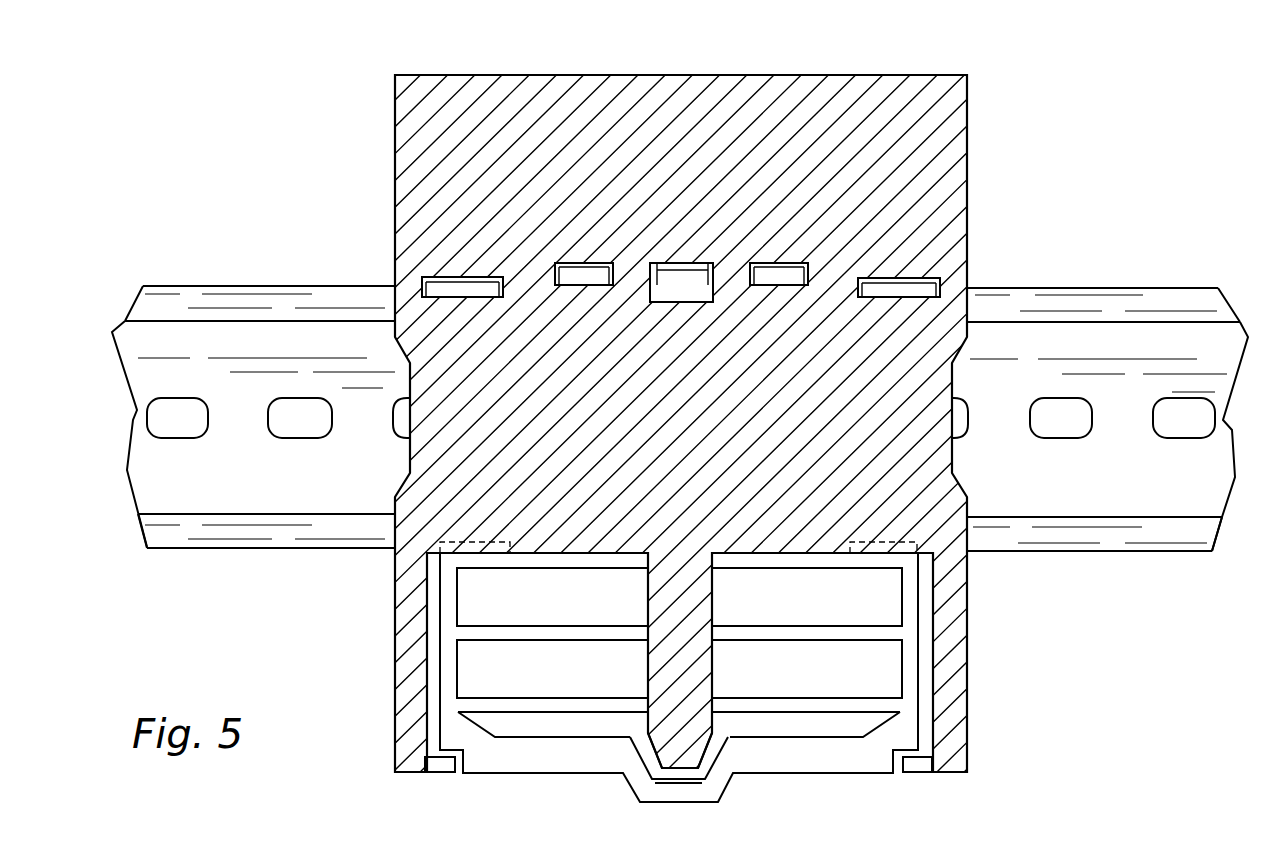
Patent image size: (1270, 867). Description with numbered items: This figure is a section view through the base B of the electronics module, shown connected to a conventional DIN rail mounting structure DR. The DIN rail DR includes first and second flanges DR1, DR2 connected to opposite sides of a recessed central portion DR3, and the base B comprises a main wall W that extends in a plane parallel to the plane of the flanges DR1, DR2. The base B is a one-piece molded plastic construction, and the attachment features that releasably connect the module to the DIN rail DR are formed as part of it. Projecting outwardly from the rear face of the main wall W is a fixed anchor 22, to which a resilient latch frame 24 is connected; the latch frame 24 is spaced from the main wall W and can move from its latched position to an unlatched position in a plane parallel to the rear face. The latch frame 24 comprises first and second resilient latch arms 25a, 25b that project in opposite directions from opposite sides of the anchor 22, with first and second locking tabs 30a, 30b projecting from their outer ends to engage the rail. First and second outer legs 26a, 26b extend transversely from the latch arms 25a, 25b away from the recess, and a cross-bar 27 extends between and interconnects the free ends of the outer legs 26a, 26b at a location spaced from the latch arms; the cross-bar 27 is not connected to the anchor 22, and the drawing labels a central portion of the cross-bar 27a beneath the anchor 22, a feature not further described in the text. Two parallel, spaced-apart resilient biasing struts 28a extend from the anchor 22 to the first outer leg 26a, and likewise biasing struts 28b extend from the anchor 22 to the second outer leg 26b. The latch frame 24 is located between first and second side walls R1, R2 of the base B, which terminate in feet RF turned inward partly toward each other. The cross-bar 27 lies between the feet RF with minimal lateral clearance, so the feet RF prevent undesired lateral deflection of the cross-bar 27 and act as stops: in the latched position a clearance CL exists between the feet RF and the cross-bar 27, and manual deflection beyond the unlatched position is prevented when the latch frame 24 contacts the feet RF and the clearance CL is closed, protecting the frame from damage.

The main wall W is at (880, 165).
The base B is at (635, 424).
The DIN rail mounting structure DR is at (680, 405).
The first flange DR1 is at (1055, 302).
The second flange DR2 is at (1043, 538).
The recessed central portion DR3 is at (1125, 500).
The first locking tab 30a is at (478, 542).
The second locking tab 30b is at (885, 542).
The first side wall R1 is at (407, 612).
The second side wall R2 is at (950, 633).
The latch frame 24 is at (498, 637).
The anchor 22 is at (685, 650).
The first latch arm 25a is at (555, 565).
The second latch arm 25b is at (812, 565).
The first outer leg 26a is at (453, 683).
The second outer leg 26b is at (907, 660).
The biasing struts 28a is at (555, 630).
The biasing struts 28b is at (815, 633).
The cross-bar 27 is at (679, 700).
The cover channel 27a is at (677, 797).
The clearance CL is at (428, 750).
The feet RF is at (438, 773).